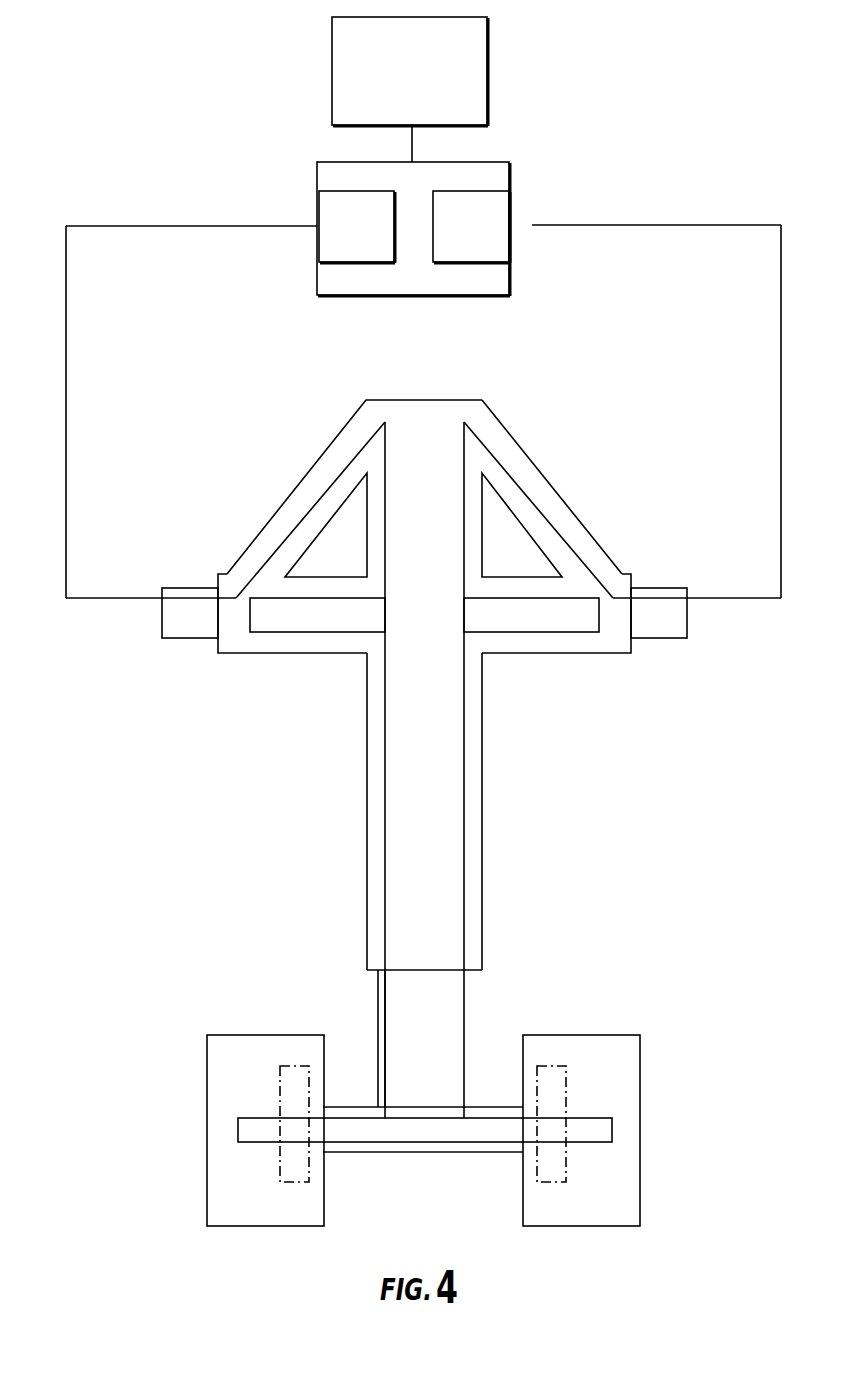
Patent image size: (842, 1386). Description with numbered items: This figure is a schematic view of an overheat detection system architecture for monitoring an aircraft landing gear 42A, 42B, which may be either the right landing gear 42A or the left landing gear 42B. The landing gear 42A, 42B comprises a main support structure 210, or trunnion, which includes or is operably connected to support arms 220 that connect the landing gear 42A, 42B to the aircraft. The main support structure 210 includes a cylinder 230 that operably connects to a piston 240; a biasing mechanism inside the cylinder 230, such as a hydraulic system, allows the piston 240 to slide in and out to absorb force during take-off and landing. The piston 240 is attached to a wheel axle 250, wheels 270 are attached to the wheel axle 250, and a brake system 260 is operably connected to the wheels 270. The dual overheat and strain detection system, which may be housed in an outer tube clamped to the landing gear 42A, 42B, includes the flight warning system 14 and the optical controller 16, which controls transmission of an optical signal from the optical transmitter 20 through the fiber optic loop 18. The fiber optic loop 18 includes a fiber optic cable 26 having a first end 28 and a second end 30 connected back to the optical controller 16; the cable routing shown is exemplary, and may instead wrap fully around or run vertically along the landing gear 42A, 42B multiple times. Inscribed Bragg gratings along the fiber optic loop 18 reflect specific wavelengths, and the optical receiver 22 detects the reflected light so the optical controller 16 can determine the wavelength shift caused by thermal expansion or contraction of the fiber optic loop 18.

The flight warning system 14 is at (420, 84).
The optical controller 16 is at (466, 278).
The fiber optic loop 18 is at (125, 163).
The optical transmitter 20 is at (484, 243).
The optical receiver 22 is at (368, 243).
The fiber optic cable 26 is at (387, 850).
The first end 28 is at (509, 228).
The second end 30 is at (317, 242).
The right landing gear 42A is at (253, 470).
The left landing gear 42B is at (543, 499).
The main support structure 210 is at (555, 642).
The support arms 220 is at (658, 638).
The cylinder 230 is at (482, 820).
The piston 240 is at (378, 1009).
The wheel axle 250 is at (433, 1153).
The brake system 260 is at (545, 1173).
The wheels 270 is at (622, 1175).